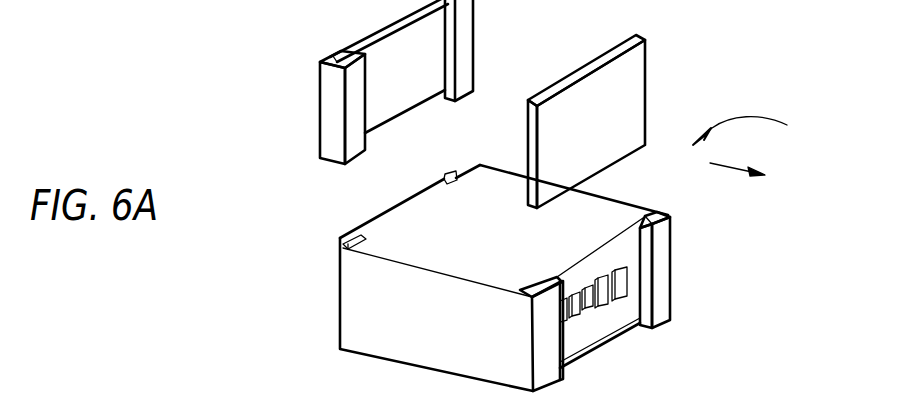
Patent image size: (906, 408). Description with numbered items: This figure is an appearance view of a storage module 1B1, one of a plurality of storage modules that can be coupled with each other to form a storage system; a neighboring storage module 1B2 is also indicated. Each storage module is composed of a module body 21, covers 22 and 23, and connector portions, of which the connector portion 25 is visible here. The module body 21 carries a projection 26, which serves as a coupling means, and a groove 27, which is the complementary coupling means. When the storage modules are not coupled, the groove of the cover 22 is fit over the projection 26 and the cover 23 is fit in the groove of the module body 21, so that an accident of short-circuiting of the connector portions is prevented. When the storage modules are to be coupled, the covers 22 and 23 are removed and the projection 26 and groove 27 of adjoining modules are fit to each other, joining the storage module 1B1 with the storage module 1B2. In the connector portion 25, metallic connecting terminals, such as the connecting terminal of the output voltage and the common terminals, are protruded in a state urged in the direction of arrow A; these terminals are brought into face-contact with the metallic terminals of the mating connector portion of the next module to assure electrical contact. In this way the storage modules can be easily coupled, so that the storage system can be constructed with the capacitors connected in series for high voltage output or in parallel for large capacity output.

The module body 21 is at (627, 213).
The cover 22 is at (337, 107).
The cover 23 is at (630, 97).
The connector portion 25 is at (555, 380).
The projection 26 is at (382, 228).
The groove 27 is at (567, 285).
The storage module 1B1 is at (754, 122).
The storage module 1B2 is at (542, 404).
The arrow (direction) A is at (727, 178).